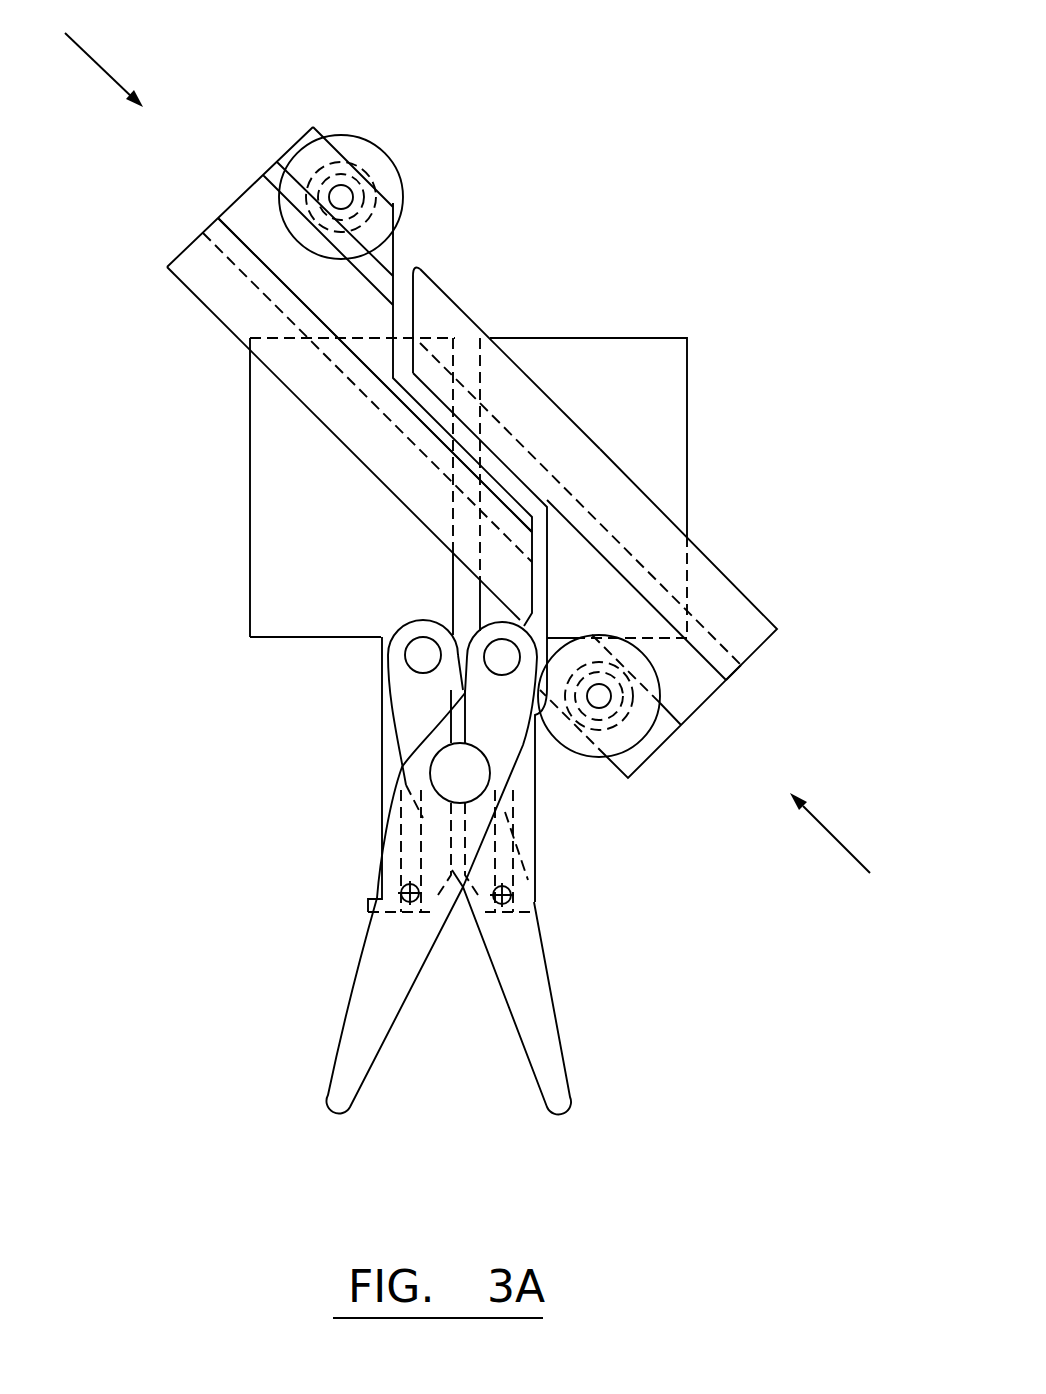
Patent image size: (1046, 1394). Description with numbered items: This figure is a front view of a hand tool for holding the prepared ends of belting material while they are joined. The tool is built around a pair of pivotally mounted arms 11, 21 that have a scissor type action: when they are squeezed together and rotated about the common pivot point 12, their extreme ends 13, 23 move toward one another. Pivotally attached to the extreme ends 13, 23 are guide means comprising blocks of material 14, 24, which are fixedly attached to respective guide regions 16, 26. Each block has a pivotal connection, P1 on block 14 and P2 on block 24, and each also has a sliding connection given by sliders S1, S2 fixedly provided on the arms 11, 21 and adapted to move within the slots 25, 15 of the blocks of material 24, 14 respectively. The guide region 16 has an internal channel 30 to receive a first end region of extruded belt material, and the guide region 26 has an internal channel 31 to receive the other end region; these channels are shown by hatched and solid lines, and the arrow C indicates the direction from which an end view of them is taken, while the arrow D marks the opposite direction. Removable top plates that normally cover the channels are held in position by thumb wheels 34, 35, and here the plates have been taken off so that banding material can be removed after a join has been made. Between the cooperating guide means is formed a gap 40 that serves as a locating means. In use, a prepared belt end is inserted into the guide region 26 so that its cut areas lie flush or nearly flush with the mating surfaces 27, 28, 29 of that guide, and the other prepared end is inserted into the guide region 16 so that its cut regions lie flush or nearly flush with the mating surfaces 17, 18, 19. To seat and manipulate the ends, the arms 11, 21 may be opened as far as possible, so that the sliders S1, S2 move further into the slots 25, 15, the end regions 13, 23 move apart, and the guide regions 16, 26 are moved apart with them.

The arm 11 is at (372, 993).
The common pivot point 12 is at (450, 770).
The extreme end of arm 13 is at (510, 713).
The block of material 14 is at (677, 418).
The slot 15 is at (507, 853).
The guide region 16 is at (763, 600).
The mating surface 17 is at (476, 445).
The mating surface 18 is at (540, 574).
The mating surface 19 is at (412, 290).
The arm 21 is at (535, 1002).
The extreme end of arm 23 is at (420, 692).
The block of material 24 is at (262, 512).
The slot 25 is at (408, 845).
The guide region 26 is at (228, 330).
The mating surface 27 is at (427, 440).
The mating surface 28 is at (395, 322).
The mating surface 29 is at (540, 543).
The internal channel 30 is at (697, 690).
The internal channel 31 is at (243, 210).
The thumb wheel 34 is at (650, 752).
The thumb wheel 35 is at (367, 143).
The gap 40 is at (465, 445).
The pivotal connection P1 is at (493, 655).
The pivotal connection P2 is at (415, 655).
The slider S1 is at (402, 900).
The slider S2 is at (535, 903).
The arrow C is at (93, 56).
The direction D arrow D is at (840, 850).